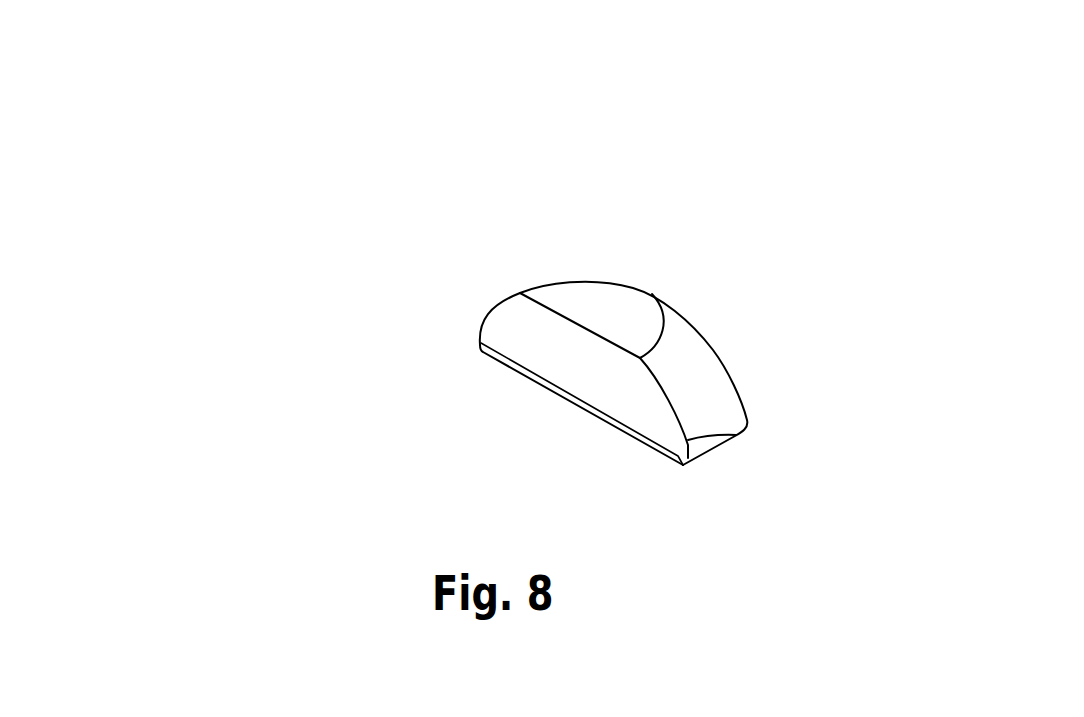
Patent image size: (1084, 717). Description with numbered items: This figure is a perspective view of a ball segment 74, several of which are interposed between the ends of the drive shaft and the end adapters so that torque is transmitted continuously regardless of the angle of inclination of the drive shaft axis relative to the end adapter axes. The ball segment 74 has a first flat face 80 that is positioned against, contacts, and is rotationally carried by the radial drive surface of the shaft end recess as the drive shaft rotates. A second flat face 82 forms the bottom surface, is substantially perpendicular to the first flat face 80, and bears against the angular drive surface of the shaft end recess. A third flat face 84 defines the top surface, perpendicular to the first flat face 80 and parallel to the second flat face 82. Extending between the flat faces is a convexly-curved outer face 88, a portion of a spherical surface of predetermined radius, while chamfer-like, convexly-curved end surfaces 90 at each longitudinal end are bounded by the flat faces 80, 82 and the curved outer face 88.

The ball segment 74 is at (337, 293).
The first flat face 80 is at (507, 343).
The second flat face 82 is at (573, 408).
The third flat face 84 is at (597, 308).
The convexly-curved outer face 88 is at (693, 383).
The convexly-curved end surface 90 is at (703, 450).